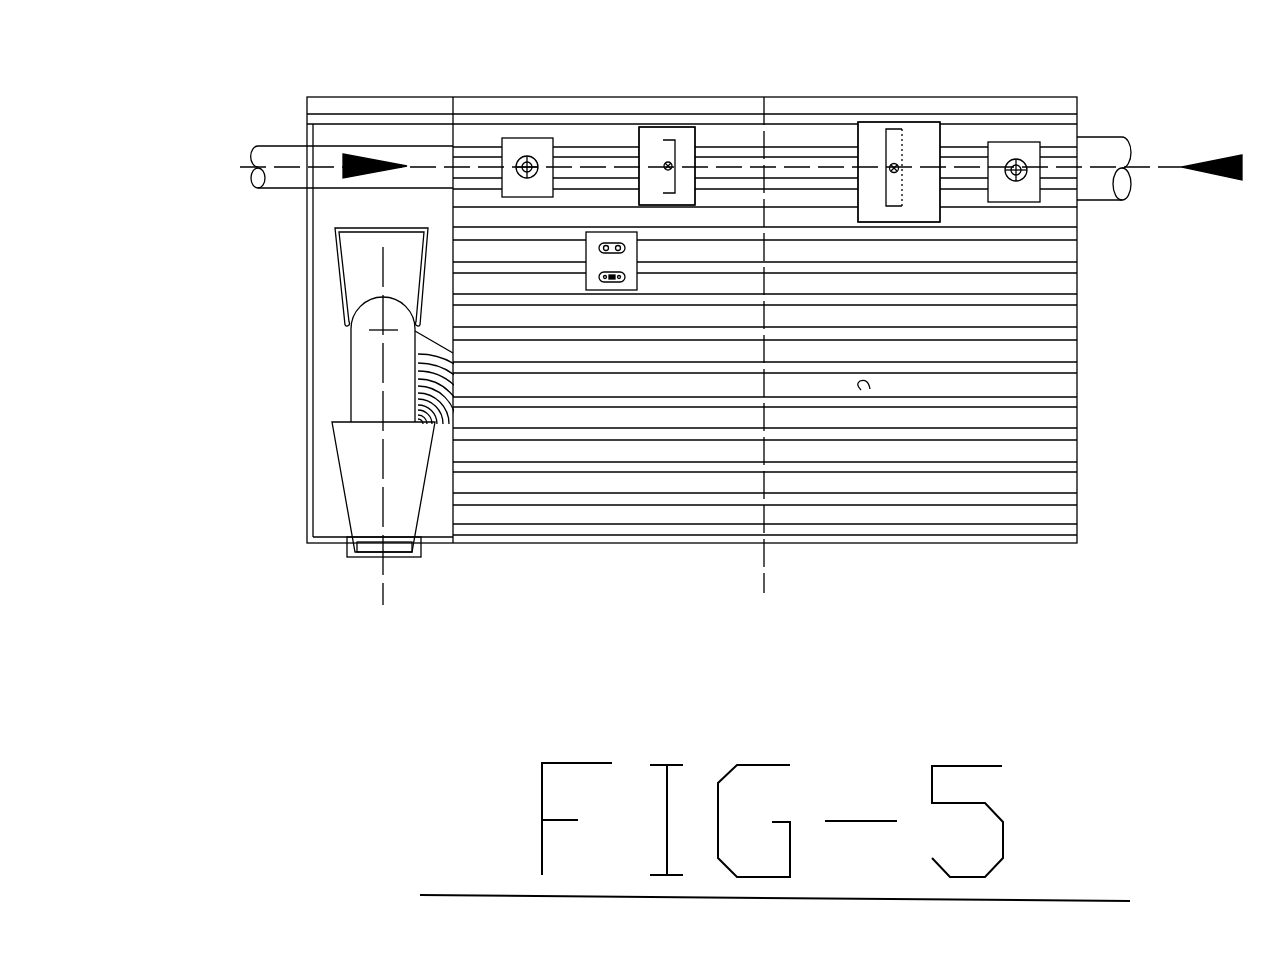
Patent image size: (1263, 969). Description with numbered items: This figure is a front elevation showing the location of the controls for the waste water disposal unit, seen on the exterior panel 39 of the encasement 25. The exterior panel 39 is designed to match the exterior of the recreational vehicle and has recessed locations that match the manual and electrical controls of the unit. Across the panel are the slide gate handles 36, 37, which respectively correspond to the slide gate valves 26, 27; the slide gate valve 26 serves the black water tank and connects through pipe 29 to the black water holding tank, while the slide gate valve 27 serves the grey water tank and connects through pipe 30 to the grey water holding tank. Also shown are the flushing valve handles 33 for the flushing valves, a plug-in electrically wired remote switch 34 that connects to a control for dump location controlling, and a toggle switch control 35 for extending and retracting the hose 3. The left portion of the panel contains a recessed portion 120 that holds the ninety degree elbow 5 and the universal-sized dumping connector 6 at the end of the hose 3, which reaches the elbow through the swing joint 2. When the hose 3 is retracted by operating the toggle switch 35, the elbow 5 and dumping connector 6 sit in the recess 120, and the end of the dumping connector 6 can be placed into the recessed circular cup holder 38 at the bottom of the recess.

The swing joint 2 is at (337, 262).
The hose 3 is at (438, 342).
The 90 degree elbow 5 is at (351, 368).
The universal-sized dumping connector 6 is at (343, 488).
The unitary housing case 25 is at (307, 387).
The slide gate valve 26 is at (887, 130).
The slide gate valve 27 is at (664, 138).
The pipe 29 is at (1100, 136).
The pipe 30 is at (289, 146).
The flushing valve handles 33 is at (527, 156).
The plug-in electrically wired remote switch 34 is at (616, 243).
The toggle switch control 35 is at (591, 166).
The slide gate handle 36 is at (893, 119).
The slide gate handle 37 is at (667, 109).
The recessed circular cup holder 38 is at (355, 557).
The exterior panel 39 is at (870, 389).
The recessed portion 120 is at (621, 345).